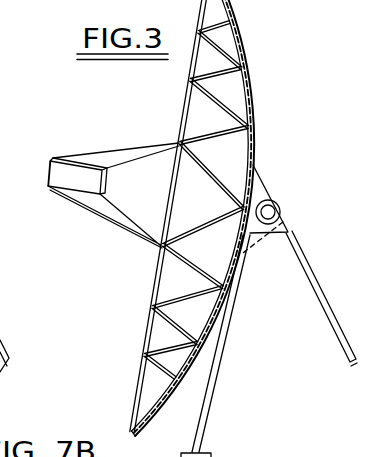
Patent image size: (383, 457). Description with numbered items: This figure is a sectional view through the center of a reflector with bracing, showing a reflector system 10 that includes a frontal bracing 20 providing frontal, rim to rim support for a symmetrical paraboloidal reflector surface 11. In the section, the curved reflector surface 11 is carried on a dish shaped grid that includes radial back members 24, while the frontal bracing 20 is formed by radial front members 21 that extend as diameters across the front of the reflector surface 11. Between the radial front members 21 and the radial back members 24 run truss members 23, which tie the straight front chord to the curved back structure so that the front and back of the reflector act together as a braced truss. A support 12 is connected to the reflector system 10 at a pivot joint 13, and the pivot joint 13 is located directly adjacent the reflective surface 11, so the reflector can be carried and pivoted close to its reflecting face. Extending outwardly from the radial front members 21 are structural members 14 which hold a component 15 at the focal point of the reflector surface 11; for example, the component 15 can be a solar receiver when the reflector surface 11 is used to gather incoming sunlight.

The reflector system 10 is at (268, 59).
The reflector surface 11 is at (250, 161).
The support 12 is at (218, 378).
The pivot joint 13 is at (275, 212).
The structural members 14 is at (123, 148).
The component 15 is at (46, 185).
The frontal bracing 20 is at (134, 363).
The radial front members 21 is at (185, 107).
The truss members 23 is at (205, 107).
The radial back members 24 is at (257, 153).